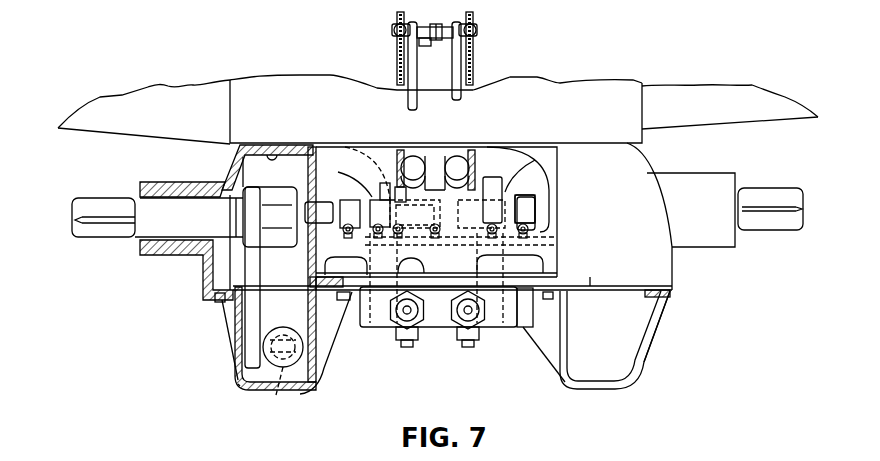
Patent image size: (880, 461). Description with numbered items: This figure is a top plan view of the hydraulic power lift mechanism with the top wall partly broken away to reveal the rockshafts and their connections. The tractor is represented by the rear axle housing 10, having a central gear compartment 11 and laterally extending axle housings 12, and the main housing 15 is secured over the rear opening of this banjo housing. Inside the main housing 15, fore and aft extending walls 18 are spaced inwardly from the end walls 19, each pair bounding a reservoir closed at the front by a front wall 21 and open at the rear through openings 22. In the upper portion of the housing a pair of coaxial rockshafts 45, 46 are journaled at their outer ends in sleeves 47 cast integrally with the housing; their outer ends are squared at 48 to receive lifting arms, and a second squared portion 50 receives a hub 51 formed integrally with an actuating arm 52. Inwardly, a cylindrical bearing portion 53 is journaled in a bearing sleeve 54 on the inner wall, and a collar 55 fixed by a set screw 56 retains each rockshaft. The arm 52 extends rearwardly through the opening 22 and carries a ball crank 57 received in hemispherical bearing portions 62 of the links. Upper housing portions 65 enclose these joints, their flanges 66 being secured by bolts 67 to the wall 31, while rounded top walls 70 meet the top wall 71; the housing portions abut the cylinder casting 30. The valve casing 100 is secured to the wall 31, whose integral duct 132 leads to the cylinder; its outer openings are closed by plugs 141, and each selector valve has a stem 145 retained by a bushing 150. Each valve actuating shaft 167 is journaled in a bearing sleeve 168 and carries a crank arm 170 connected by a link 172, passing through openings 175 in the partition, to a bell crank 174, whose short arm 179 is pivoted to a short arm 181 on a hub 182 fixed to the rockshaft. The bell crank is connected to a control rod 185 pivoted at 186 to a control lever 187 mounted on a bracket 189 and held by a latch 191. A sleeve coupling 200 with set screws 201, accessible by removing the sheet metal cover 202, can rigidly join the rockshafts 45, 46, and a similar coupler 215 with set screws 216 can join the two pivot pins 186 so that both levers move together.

The rear axle housing 10 is at (557, 92).
The central gear compartment 11 is at (600, 110).
The axle housings 12 is at (160, 117).
The main housing 15 is at (593, 200).
The fore and aft extending walls 18 is at (309, 262).
The end walls 19 is at (207, 267).
The front wall 21 is at (272, 143).
The openings 22 is at (233, 298).
The cylinder casting 30 is at (332, 360).
The wall 31 is at (309, 271).
The rockshaft 45 is at (162, 215).
The rockshaft 46 is at (763, 190).
The sleeves 47 is at (162, 180).
The squared outer ends 48 is at (92, 230).
The second squared portion 50 is at (233, 212).
The hub 51 is at (270, 217).
The actuating arm 52 is at (253, 310).
The cylindrical bearing portion 53 is at (277, 214).
The bearing sleeve 54 is at (540, 207).
The collar 55 is at (560, 170).
The set screw 56 is at (560, 216).
The ball crank 57 is at (275, 380).
The hemispherical bearing portion 62 is at (305, 349).
The upper housing portions 65 is at (237, 384).
The flanges 66 is at (215, 296).
The bolts 67 is at (232, 300).
The rounded top walls 70 is at (655, 320).
The top wall 71 is at (592, 278).
The valve casing 100 is at (508, 329).
The duct 132 is at (415, 266).
The plugs 141 is at (462, 345).
The stem 145 is at (418, 332).
The bushing 150 is at (398, 329).
The shaft 167 is at (357, 296).
The bearing sleeve 168 is at (558, 241).
The crank arms 170 is at (352, 152).
The link 172 is at (410, 155).
The bell crank 174 is at (396, 160).
The openings 175 is at (441, 156).
The short arm 179 is at (380, 190).
The short arm 181 is at (372, 197).
The hub 182 is at (348, 205).
The control rod 185 is at (452, 96).
The pivot 186 is at (438, 39).
The control lever 187 is at (393, 31).
The bracket 189 is at (397, 60).
The latches 191 is at (394, 27).
The sleeve coupling 200 is at (460, 261).
The set screws 201 is at (405, 261).
The sheet metal cover 202 is at (542, 150).
The coupler 215 is at (425, 47).
The set screws 216 is at (444, 25).